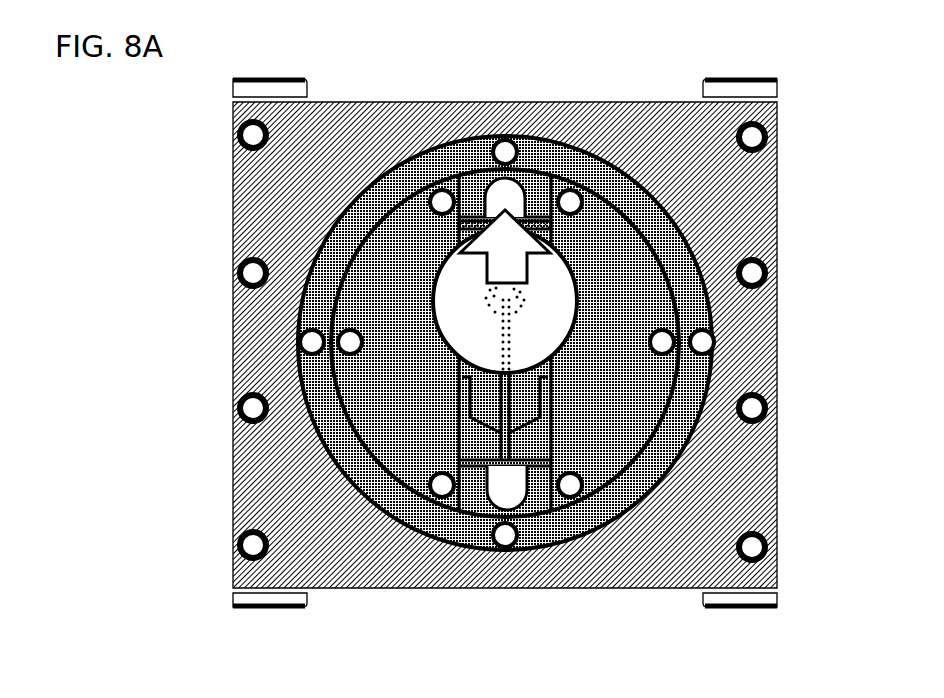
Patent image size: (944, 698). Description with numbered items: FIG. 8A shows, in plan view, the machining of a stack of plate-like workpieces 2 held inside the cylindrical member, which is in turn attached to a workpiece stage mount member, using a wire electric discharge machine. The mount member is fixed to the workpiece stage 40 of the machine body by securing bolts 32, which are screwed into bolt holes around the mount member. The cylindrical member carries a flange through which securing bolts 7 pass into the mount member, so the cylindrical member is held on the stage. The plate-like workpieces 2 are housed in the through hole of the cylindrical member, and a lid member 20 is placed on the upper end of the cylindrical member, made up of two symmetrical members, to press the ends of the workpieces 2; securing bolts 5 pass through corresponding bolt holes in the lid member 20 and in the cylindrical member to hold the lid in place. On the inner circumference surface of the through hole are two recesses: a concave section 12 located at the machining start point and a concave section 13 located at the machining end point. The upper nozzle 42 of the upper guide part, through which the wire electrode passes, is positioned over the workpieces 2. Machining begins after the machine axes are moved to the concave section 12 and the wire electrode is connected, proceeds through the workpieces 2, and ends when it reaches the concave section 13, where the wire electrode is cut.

The workpiece stage 40 is at (262, 86).
The securing bolts 32 is at (773, 152).
The lid member 20 is at (423, 235).
The concave section 13 is at (517, 200).
The concave section 12 is at (497, 500).
The upper nozzle 42 is at (433, 293).
The securing bolts 5 is at (660, 337).
The securing bolts 7 is at (703, 337).
The plate-like workpieces 2 is at (495, 385).